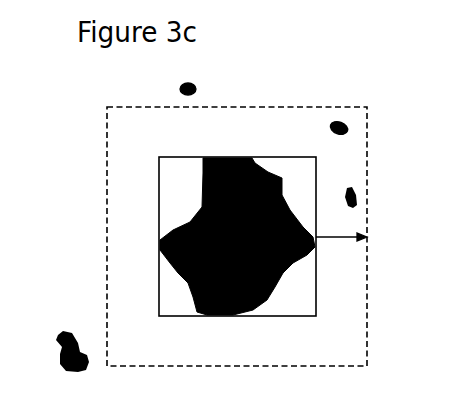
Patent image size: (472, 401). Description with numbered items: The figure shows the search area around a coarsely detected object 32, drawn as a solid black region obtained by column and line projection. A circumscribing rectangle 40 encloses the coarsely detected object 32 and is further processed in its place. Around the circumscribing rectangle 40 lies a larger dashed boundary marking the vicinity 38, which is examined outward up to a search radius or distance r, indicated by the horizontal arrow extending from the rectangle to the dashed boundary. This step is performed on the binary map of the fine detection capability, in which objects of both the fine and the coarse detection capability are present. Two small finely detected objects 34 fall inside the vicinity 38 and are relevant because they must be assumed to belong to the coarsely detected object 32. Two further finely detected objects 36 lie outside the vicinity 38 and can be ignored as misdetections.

The coarsely detected object 32 is at (160, 257).
The finely detected objects 34 is at (345, 123).
The finely detected objects outside the vicinity 36 is at (196, 84).
The vicinity 38 is at (367, 272).
The circumscribing rectangle 40 is at (158, 198).